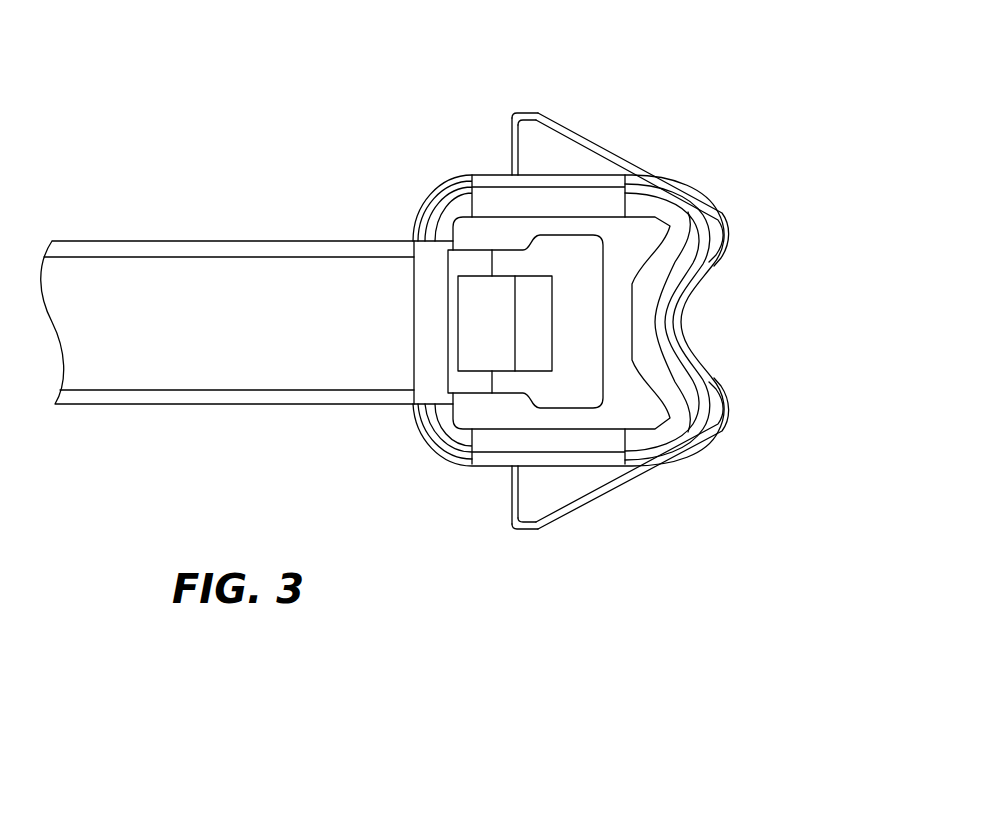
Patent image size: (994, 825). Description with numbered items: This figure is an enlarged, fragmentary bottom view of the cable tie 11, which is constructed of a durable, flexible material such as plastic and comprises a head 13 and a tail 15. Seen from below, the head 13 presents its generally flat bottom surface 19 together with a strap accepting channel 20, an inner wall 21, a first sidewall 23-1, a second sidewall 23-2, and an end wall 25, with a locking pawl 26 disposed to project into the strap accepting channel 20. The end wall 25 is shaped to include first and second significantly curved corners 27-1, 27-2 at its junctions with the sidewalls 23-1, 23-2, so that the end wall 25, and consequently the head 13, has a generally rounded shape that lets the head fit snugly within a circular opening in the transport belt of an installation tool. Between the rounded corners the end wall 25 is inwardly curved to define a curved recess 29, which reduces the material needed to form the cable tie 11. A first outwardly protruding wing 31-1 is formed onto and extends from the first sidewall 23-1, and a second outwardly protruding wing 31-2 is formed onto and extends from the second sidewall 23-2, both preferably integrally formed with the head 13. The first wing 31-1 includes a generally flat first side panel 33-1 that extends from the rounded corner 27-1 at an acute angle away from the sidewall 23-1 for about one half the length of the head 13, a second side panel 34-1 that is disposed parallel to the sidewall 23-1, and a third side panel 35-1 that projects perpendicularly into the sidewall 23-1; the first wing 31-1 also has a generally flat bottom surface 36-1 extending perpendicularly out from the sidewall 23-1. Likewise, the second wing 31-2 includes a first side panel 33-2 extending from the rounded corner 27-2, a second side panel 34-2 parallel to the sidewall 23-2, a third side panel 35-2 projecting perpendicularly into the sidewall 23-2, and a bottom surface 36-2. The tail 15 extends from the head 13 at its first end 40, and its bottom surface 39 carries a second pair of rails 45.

The cable tie 11 is at (326, 126).
The head 13 is at (555, 52).
The tail 15 is at (146, 195).
The bottom surface 19 is at (637, 247).
The strap accepting channel 20 is at (572, 385).
The inner wall 21 is at (412, 407).
The first sidewall 23-1 is at (483, 172).
The second sidewall 23-2 is at (477, 472).
The end wall 25 is at (683, 350).
The locking pawl 26 is at (528, 290).
The first rounded corner 27-1 is at (722, 228).
The second rounded corner 27-2 is at (722, 428).
The curved recess 29 is at (726, 300).
The first outwardly protruding wing 31-1 is at (580, 103).
The second outwardly protruding wing 31-2 is at (607, 545).
The first side panel 33-1 is at (648, 162).
The first side panel 33-2 is at (657, 477).
The second side panel 34-1 is at (524, 112).
The second side panel 34-2 is at (532, 530).
The third side panel 35-1 is at (507, 133).
The third side panel 35-2 is at (510, 503).
The bottom surface 36-1 is at (597, 163).
The bottom surface 36-2 is at (587, 490).
The bottom surface 39 is at (263, 283).
The first end 40 is at (390, 293).
The second pair of rails 45 is at (93, 244).